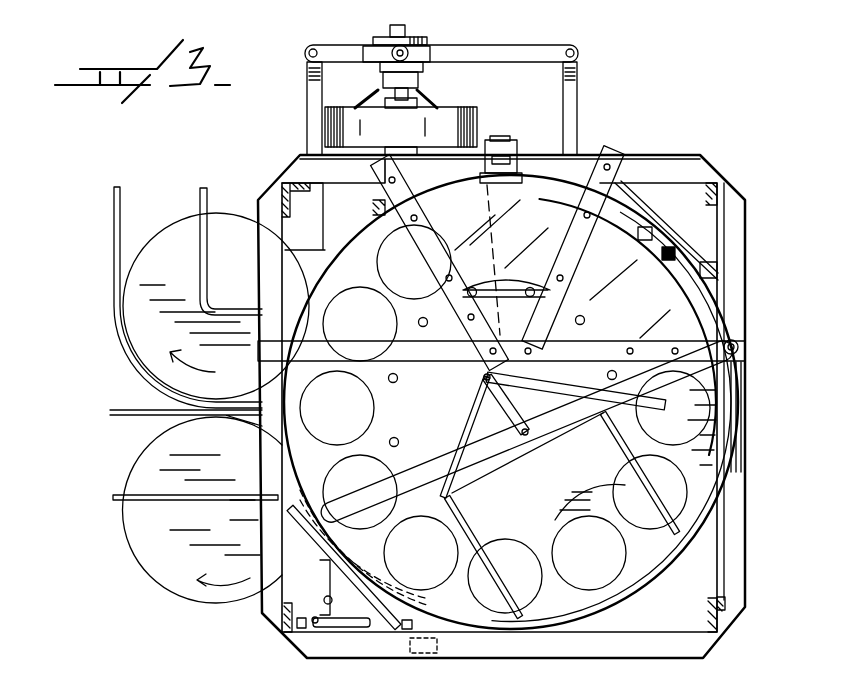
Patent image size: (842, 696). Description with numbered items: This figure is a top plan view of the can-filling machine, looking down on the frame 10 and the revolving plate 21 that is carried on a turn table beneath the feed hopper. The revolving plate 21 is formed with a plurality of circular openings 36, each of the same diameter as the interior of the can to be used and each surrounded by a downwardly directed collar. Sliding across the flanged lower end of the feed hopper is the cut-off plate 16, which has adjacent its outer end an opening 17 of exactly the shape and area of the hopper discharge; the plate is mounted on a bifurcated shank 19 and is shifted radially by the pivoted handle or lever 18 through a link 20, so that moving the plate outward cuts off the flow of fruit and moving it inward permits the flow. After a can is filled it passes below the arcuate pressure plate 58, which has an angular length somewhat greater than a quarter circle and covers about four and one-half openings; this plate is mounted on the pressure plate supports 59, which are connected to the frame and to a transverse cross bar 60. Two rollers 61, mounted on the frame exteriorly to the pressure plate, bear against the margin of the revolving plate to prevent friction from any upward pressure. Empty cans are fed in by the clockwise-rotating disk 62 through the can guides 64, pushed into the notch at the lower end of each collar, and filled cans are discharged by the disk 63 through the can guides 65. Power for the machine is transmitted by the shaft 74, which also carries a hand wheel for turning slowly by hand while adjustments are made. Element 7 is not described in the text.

The plate 7 is at (473, 190).
The frame 10 is at (387, 655).
The cut-off plate 16 is at (478, 526).
The opening 17 is at (548, 530).
The pivoted handle or lever 18 is at (440, 470).
The bifurcated shank 19 is at (436, 296).
The link 20 is at (508, 396).
The revolving plate 21 is at (466, 606).
The circular openings 36 is at (356, 430).
The pressure plate 58 is at (553, 198).
The pressure plate supports 59 is at (578, 246).
The transverse cross bar 60 is at (625, 341).
The rollers 61 is at (520, 172).
The rotatable disk 62 is at (152, 572).
The disk 63 is at (168, 226).
The can guides 64 is at (112, 418).
The can guides 65 is at (205, 253).
The shaft 74 is at (405, 32).